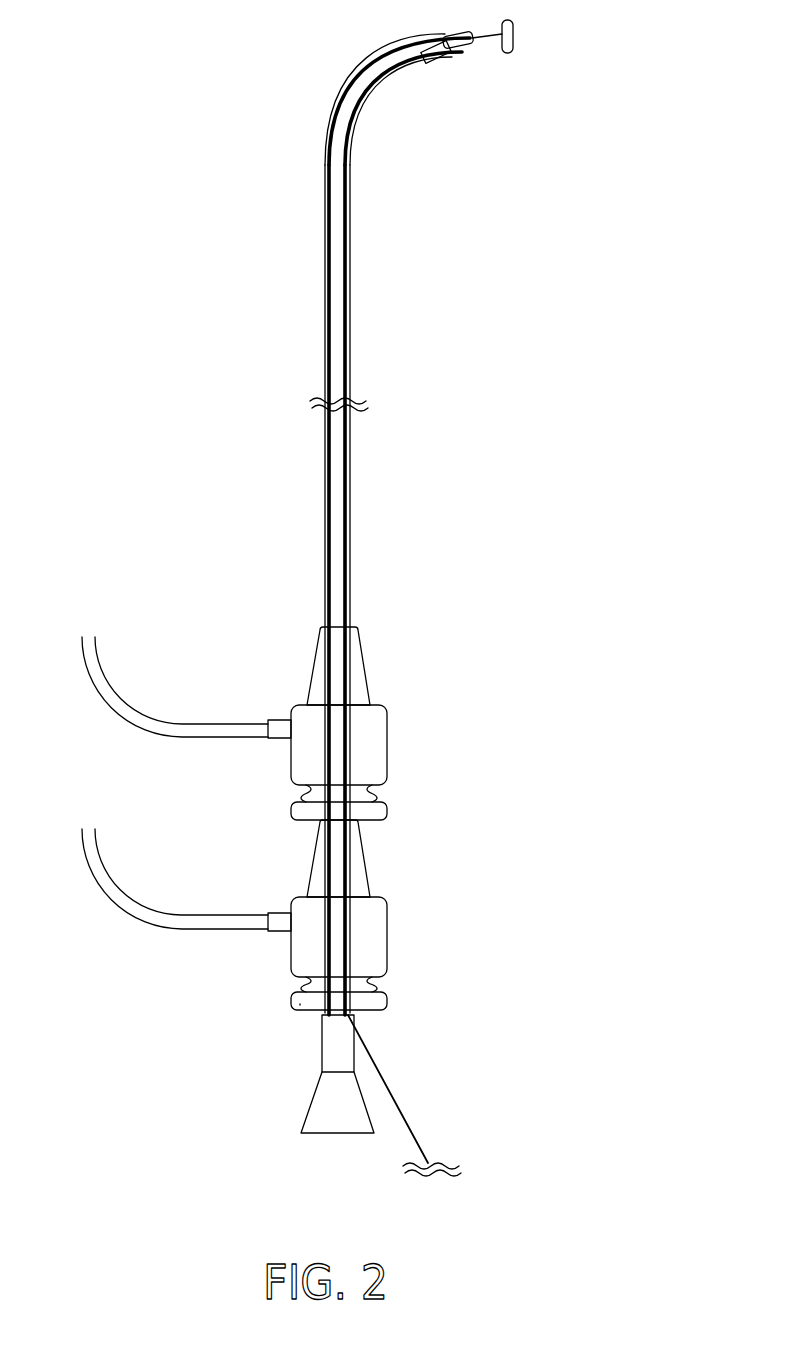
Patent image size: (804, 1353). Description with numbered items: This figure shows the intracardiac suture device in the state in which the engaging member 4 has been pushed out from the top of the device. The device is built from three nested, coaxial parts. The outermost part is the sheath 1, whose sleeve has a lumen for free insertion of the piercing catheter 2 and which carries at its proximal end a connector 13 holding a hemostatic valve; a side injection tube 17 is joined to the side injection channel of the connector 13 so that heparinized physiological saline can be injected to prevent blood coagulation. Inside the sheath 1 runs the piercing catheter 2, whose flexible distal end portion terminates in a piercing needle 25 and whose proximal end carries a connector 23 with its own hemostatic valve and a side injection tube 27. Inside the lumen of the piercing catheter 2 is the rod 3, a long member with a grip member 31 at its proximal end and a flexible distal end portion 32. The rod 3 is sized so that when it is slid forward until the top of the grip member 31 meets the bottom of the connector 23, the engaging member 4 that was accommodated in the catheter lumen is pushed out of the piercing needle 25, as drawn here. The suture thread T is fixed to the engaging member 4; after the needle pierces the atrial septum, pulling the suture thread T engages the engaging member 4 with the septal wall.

The sheath 1 is at (351, 520).
The piercing catheter 2 is at (326, 545).
The rod 3 is at (330, 997).
The engaging member 4 is at (513, 37).
The connector 13 is at (368, 672).
The side injection tube 17 is at (156, 735).
The connector 23 is at (371, 878).
The piercing needle 25 is at (436, 56).
The side injection tube 27 is at (135, 918).
The grip member 31 is at (307, 1107).
The distal end portion 32 is at (448, 41).
The suture thread T is at (401, 1111).